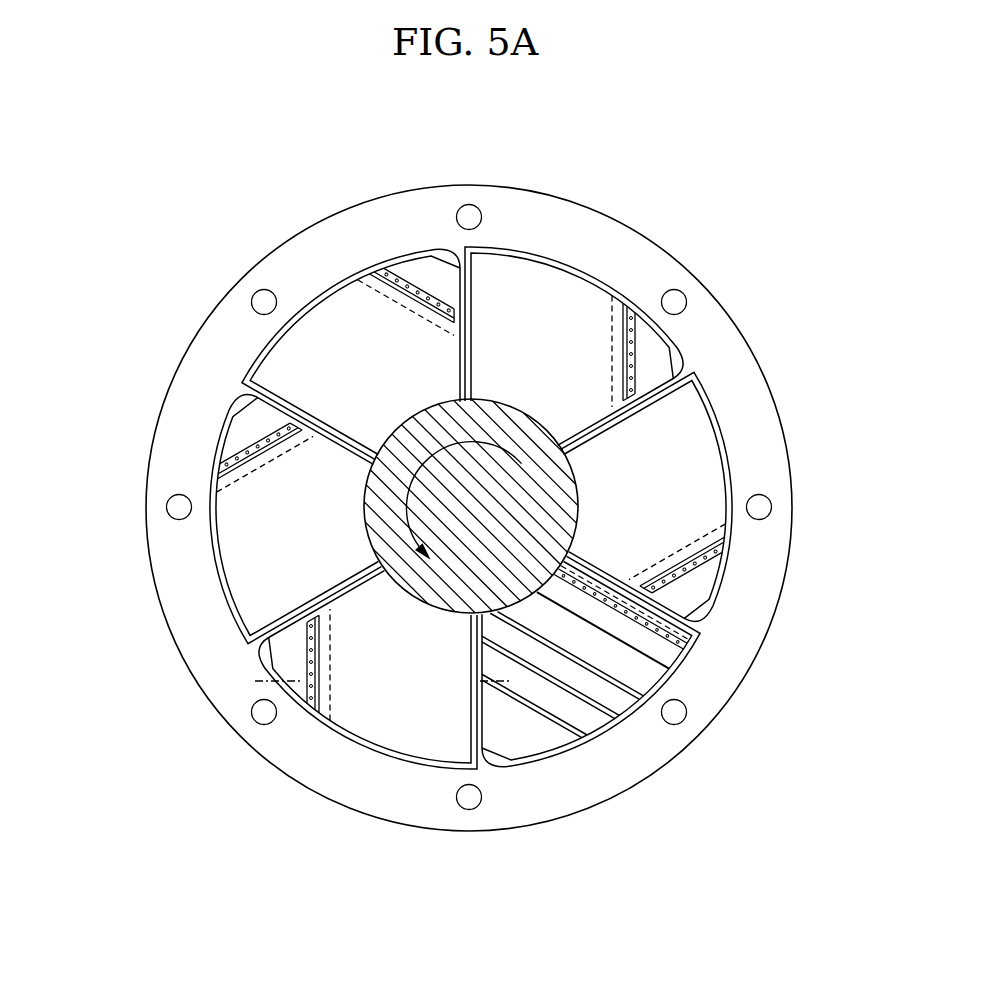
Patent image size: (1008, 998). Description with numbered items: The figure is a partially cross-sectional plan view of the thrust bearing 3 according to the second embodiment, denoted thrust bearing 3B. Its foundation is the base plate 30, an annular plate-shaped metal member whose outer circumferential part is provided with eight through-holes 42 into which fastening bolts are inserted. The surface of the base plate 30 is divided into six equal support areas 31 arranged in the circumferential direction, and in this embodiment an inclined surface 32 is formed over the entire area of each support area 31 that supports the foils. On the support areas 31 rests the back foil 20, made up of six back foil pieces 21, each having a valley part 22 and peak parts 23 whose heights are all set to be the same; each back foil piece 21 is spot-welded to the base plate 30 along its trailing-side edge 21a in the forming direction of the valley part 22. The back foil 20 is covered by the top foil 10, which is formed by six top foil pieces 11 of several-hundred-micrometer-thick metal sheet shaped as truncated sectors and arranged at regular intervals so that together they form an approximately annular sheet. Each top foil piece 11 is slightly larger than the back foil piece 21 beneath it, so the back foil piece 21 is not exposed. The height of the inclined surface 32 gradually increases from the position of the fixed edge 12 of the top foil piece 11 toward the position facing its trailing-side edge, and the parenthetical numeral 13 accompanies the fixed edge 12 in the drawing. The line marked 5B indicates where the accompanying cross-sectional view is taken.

The thrust bearing 3 is at (476, 484).
The thrust bearing 3B is at (476, 484).
The top foil 10 is at (445, 506).
The top foil piece 11 is at (690, 472).
The fixed edge 12 is at (420, 292).
The permanent magnet 13 is at (240, 444).
The back foil 20 is at (658, 687).
The back foil piece 21 is at (603, 630).
The edge 21a is at (621, 607).
The valley part 22 is at (566, 654).
The peak part 23 is at (541, 692).
The base plate 30 is at (632, 242).
The support area 31 is at (330, 272).
The inclined surface 32 is at (574, 268).
The through-hole 42 is at (477, 208).
The 5B-5B line 5B is at (275, 690).